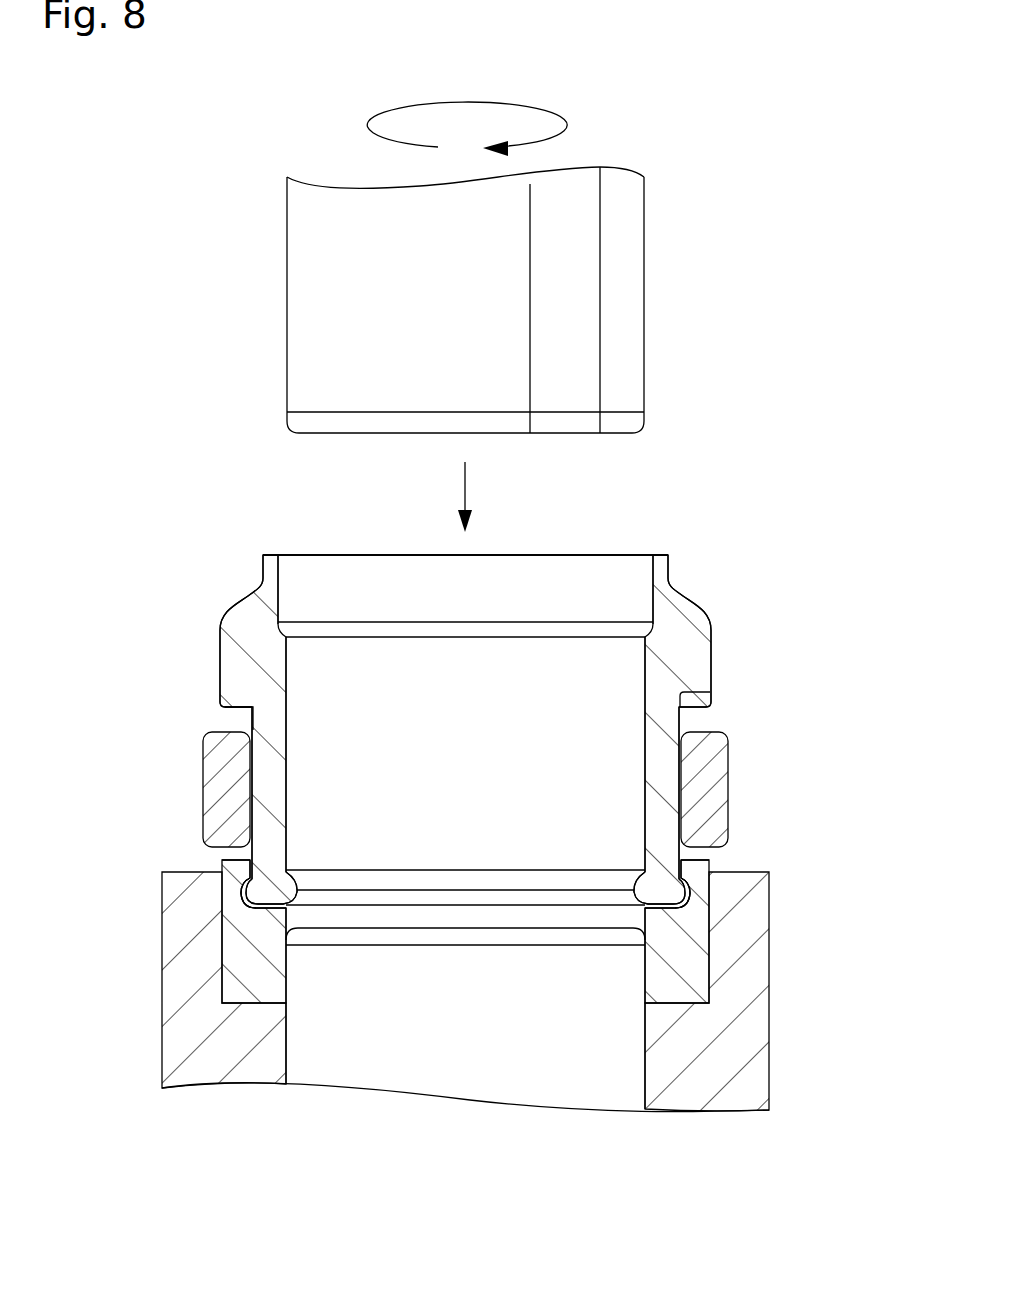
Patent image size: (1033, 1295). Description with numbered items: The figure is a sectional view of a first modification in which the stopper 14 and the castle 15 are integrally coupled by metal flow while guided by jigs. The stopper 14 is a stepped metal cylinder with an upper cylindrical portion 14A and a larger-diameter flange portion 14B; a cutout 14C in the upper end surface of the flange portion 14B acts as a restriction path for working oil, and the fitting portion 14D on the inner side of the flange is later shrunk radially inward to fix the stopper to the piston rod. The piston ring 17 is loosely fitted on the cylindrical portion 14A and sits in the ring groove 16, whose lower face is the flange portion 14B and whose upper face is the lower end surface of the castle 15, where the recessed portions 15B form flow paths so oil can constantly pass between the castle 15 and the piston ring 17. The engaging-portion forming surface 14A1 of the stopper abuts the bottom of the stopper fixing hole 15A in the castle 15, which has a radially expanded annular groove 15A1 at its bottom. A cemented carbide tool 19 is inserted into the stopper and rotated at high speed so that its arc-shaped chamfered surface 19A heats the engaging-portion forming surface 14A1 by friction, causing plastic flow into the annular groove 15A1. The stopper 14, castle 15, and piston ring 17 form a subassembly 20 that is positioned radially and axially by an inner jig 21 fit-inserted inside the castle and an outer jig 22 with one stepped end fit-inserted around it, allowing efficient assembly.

The stopper 14 is at (481, 730).
The cylindrical portion 14A is at (662, 792).
The engaging-portion forming surface 14A1 is at (700, 870).
The flange portion 14B is at (700, 660).
The cutout 14C is at (692, 706).
The fitting portion 14D is at (660, 580).
The castle 15 is at (469, 920).
The stopper fixing hole 15A is at (685, 902).
The annular groove 15A1 is at (242, 893).
The recessed portions 15B is at (222, 855).
The ring groove 16 is at (250, 724).
The piston ring 17 is at (222, 783).
The cemented carbide tool 19 is at (465, 302).
The arc-shaped chamfered surface 19A is at (640, 427).
The subassembly 20 is at (222, 602).
The inner jig 21 is at (465, 1058).
The outer jig 22 is at (228, 1053).